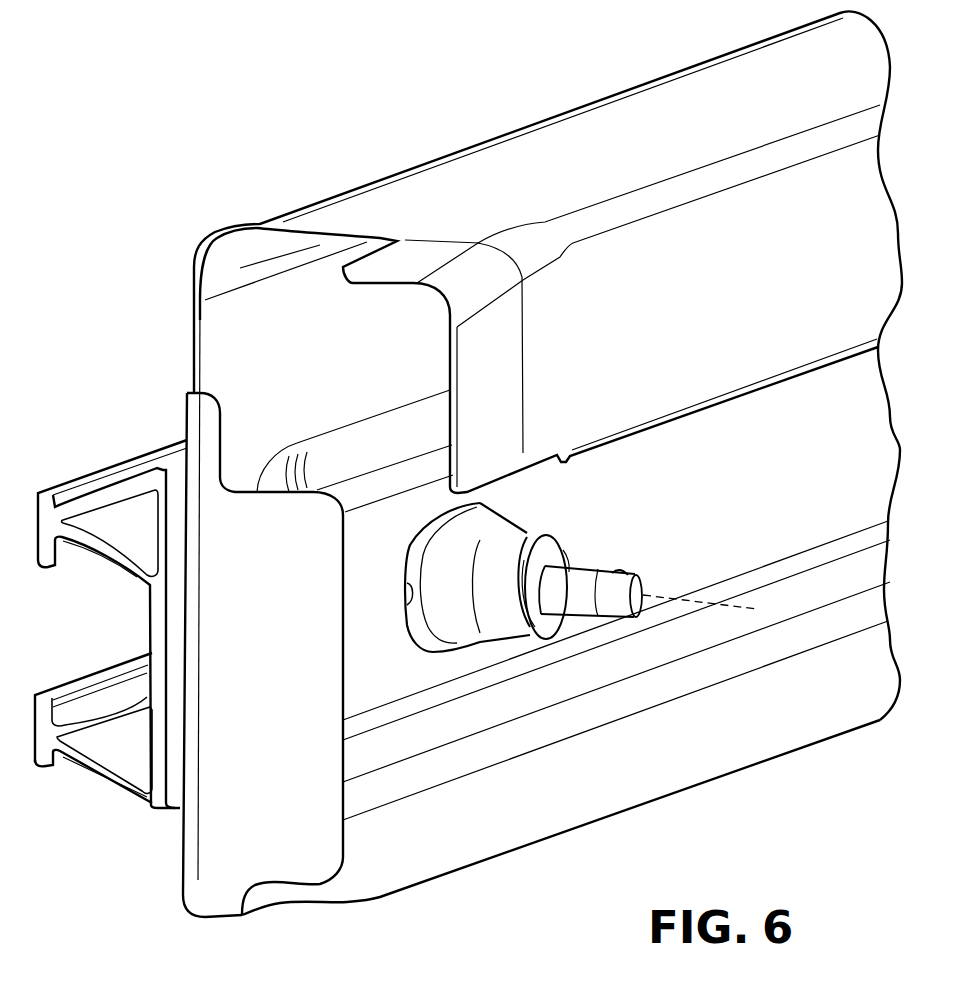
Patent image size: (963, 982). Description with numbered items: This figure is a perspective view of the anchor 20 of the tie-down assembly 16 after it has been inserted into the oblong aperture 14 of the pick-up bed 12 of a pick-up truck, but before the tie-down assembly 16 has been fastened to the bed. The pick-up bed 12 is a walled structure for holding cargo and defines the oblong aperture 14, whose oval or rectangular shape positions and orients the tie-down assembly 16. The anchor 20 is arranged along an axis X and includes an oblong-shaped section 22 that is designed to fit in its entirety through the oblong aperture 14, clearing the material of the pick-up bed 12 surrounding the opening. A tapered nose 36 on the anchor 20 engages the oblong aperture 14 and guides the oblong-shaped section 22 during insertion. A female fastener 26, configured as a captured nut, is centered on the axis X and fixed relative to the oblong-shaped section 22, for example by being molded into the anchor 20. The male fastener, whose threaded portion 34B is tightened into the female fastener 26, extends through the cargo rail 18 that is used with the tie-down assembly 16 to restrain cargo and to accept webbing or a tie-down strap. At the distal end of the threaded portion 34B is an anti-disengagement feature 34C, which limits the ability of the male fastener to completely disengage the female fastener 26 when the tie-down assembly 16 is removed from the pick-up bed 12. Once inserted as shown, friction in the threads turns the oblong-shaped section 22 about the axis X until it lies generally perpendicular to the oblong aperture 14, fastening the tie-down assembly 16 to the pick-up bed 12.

The pick-up bed 12 is at (445, 187).
The oblong aperture 14 is at (422, 532).
The tie-down assembly 16 is at (717, 550).
The cargo rail 18 is at (175, 792).
The anchor 20 is at (485, 657).
The oblong-shaped section 22 is at (407, 603).
The female fastener 26 is at (527, 541).
The threaded portion 34B is at (588, 580).
The anti-disengagement feature 34C is at (618, 573).
The tapered nose 36 is at (452, 635).
The axis X is at (728, 604).